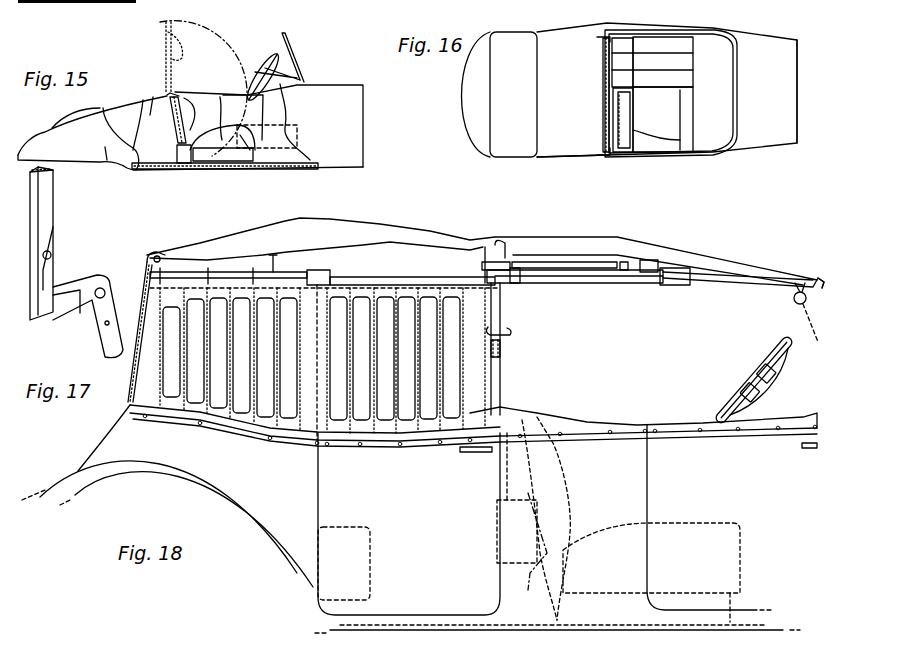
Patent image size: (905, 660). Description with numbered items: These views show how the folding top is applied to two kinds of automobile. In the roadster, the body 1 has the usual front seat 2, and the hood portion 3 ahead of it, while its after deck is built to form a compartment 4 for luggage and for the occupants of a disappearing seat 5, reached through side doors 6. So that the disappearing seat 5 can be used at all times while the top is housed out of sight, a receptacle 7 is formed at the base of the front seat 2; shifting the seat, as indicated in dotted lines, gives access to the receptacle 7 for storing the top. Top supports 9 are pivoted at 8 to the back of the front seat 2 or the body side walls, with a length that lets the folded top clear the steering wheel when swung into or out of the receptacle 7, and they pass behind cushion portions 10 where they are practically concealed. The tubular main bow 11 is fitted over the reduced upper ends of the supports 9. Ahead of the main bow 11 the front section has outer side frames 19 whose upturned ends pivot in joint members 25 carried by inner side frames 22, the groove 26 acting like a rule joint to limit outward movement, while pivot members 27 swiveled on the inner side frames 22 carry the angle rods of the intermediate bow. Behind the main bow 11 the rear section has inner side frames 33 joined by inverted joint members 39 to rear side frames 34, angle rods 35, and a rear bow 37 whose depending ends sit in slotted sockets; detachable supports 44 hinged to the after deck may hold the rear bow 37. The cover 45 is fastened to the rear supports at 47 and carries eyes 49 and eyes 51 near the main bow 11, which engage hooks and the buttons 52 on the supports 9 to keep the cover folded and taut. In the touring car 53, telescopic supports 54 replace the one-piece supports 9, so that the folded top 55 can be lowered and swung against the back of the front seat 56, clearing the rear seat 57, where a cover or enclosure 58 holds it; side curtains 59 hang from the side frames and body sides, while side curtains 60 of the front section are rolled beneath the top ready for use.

In FIG. 15, the roadster body 1 is at (345, 70).
In FIG. 16, the roadster body 1 is at (797, 95).
In FIG. 15, the front seat 2 is at (267, 160).
In FIG. 16, the front seat 2 is at (690, 45).
In FIG. 15, the hood 3 is at (107, 162).
In FIG. 16, the hood 3 is at (556, 55).
In FIG. 15, the compartment 4 is at (155, 113).
In FIG. 15, the disappearing seat 5 is at (63, 120).
In FIG. 16, the disappearing seat 5 is at (500, 143).
In FIG. 15, the side doors 6 is at (130, 103).
In FIG. 16, the side doors 6 is at (580, 158).
In FIG. 15, the receptacle 7 is at (183, 165).
In FIG. 16, the receptacle 7 is at (640, 150).
In FIG. 18, the receptacle 7 is at (826, 278).
In FIG. 15, the pivot 8 is at (178, 96).
In FIG. 16, the pivot 8 is at (597, 37).
In FIG. 17, the pivot 8 is at (96, 298).
In FIG. 15, the top supports 9 is at (190, 118).
In FIG. 16, the top supports 9 is at (622, 38).
In FIG. 17, the top supports 9 is at (53, 188).
In FIG. 15, the cushion portions 10 is at (210, 118).
In FIG. 16, the cushion portions 10 is at (630, 40).
In FIG. 18, the main bow 11 is at (508, 258).
In FIG. 18, the outer side frames 19 is at (712, 282).
In FIG. 18, the inner side frames 22 is at (592, 283).
In FIG. 18, the joint members 25 is at (678, 268).
In FIG. 18, the groove or seat 26 is at (648, 260).
In FIG. 18, the pivot members 27 is at (622, 262).
In FIG. 18, the inner side frames 33 is at (365, 277).
In FIG. 18, the rear side frames 34 is at (203, 272).
In FIG. 18, the angle rods 35 is at (273, 257).
In FIG. 18, the rear bow 37 is at (158, 255).
In FIG. 18, the joint members 39 is at (326, 270).
In FIG. 18, the supports 44 is at (133, 384).
In FIG. 15, the cover 45 is at (208, 168).
In FIG. 16, the cover 45 is at (665, 145).
In FIG. 18, the fastening 47 is at (145, 290).
In FIG. 18, the eyes 49 is at (530, 286).
In FIG. 18, the eyes 51 is at (470, 265).
In FIG. 18, the buttons or hooks 52 is at (505, 326).
In FIG. 18, the touring car 53 is at (614, 424).
In FIG. 18, the telescopic supports 54 is at (500, 378).
In FIG. 18, the top 55 is at (488, 240).
In FIG. 18, the front seat 56 is at (572, 490).
In FIG. 18, the rear seat 57 is at (372, 560).
In FIG. 18, the cover or enclosure 58 is at (522, 546).
In FIG. 18, the side curtains 59 is at (405, 297).
In FIG. 18, the side curtains 60 is at (575, 262).